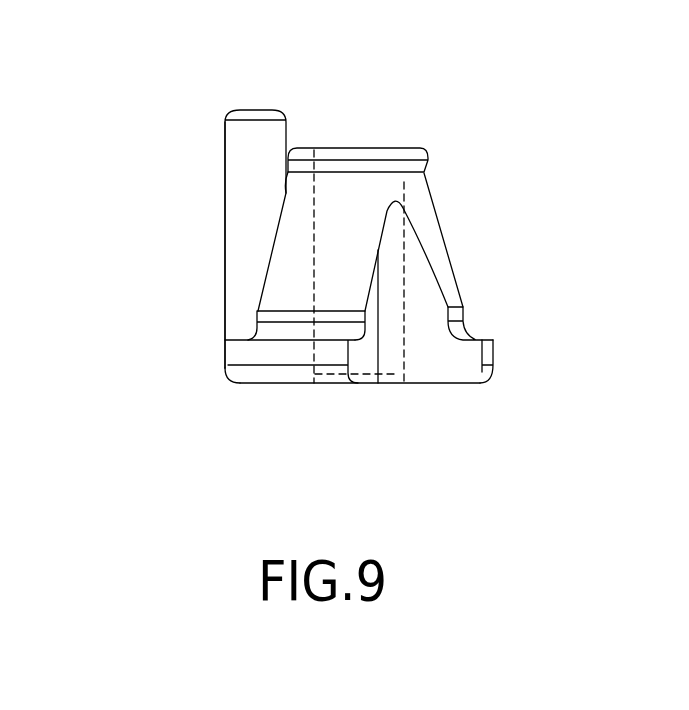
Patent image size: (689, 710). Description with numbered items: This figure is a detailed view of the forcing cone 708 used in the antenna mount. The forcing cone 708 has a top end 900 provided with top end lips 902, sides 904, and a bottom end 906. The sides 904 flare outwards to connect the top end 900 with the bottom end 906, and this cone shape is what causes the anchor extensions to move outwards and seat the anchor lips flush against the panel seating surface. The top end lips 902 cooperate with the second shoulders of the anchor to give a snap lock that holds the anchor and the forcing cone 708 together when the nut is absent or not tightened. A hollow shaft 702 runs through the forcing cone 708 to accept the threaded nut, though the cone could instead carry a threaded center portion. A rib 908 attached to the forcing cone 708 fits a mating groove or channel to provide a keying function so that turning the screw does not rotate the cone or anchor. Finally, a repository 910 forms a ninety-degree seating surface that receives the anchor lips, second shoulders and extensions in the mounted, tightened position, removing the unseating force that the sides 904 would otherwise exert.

The top end 900 is at (411, 191).
The top end lips 902 is at (430, 150).
The sides 904 is at (453, 258).
The bottom end 906 is at (326, 421).
The rib 908 is at (227, 274).
The repository 910 is at (465, 322).
The forcing cone 708 is at (164, 217).
The hollow shaft 702 is at (272, 400).